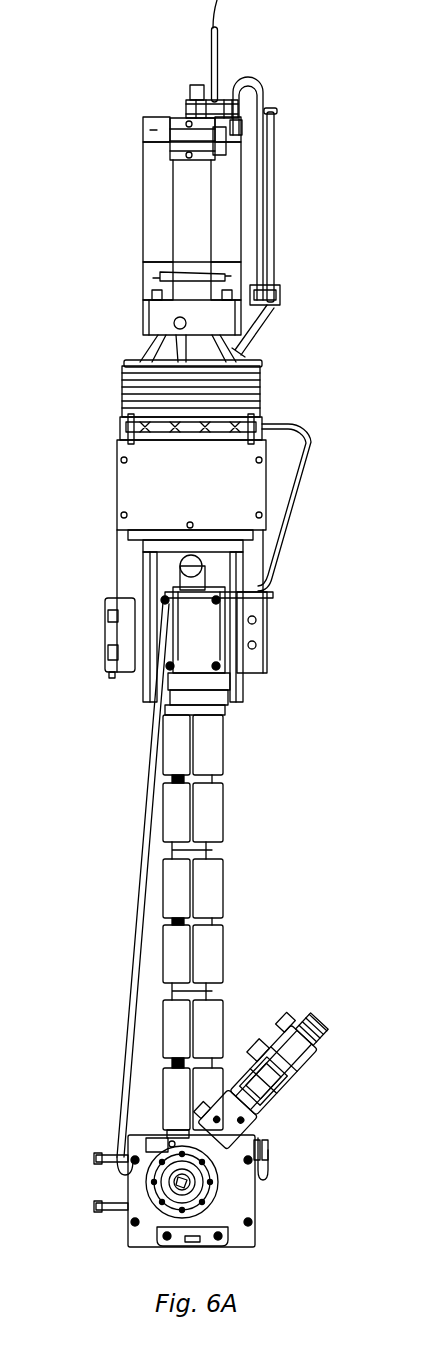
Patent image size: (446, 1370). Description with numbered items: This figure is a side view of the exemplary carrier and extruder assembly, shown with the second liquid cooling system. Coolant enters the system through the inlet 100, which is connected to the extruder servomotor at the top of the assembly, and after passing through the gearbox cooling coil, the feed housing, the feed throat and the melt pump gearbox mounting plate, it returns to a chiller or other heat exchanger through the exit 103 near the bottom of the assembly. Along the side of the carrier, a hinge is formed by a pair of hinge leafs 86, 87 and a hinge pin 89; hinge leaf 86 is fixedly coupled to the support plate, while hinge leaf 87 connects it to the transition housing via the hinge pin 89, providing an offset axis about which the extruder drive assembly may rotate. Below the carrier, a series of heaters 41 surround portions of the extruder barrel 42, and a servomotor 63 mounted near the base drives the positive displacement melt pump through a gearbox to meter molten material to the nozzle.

The inlet 100 is at (237, 0).
The hinge pin 89 is at (110, 586).
The hinge leaf 87 is at (110, 620).
The hinge leaf 86 is at (110, 636).
The heaters 41 is at (213, 747).
The extruder barrel 42 is at (208, 850).
The servomotor 63 is at (318, 1022).
The exit 103 is at (262, 1160).